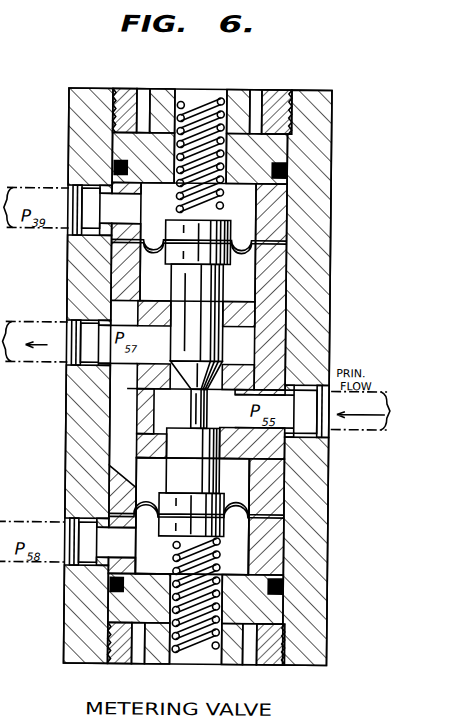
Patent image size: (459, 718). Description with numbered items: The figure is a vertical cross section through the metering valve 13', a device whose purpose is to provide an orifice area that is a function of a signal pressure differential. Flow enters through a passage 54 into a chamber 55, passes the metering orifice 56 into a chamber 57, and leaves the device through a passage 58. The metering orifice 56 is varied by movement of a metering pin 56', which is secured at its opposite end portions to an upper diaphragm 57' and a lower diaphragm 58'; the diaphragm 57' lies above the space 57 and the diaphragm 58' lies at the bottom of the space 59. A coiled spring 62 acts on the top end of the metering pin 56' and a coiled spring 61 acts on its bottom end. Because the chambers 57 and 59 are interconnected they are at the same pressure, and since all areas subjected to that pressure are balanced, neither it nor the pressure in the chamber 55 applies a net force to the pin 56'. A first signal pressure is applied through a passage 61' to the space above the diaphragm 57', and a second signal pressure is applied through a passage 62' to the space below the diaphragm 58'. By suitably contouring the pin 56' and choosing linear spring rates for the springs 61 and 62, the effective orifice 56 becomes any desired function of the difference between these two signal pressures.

The metering valve 13' is at (217, 351).
The passage 54 is at (312, 419).
The chamber 55 is at (198, 441).
The metering orifice 56 is at (221, 368).
The metering pin 56' is at (211, 313).
The chamber 57 is at (142, 333).
The diaphragm 57' is at (199, 231).
The passage 58 is at (92, 347).
The diaphragm 58' is at (197, 504).
The space 59 is at (249, 479).
The coiled spring 61 is at (194, 641).
The passage 61' is at (52, 179).
The coiled spring 62 is at (205, 113).
The passage 62' is at (52, 580).